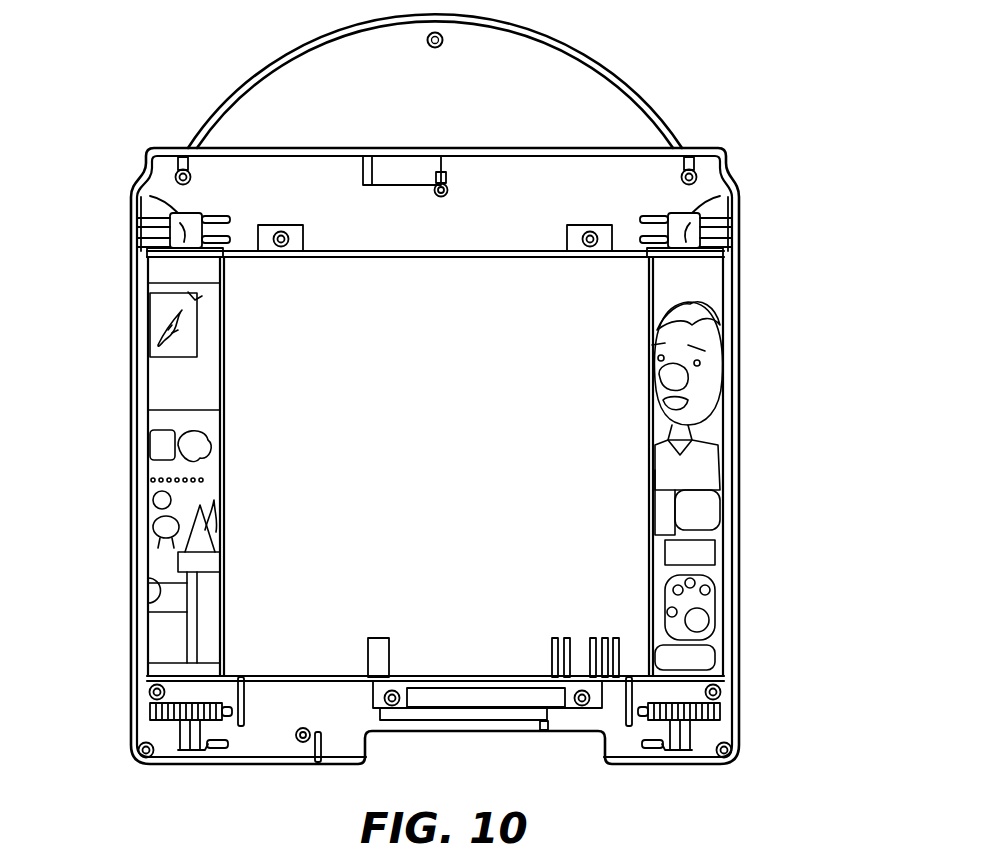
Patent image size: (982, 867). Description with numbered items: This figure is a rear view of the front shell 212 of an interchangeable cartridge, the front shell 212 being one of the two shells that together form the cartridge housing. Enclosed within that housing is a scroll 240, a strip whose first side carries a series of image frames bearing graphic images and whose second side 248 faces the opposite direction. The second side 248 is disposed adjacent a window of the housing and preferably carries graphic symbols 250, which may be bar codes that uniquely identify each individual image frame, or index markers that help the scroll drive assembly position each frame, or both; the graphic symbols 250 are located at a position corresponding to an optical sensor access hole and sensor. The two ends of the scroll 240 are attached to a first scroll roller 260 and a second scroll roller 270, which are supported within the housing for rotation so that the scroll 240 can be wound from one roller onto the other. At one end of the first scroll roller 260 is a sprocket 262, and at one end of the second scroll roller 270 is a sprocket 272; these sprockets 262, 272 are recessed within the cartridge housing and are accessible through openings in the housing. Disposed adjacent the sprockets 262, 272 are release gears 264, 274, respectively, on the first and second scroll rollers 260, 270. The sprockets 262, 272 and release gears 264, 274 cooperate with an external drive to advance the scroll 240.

The front shell 212 is at (648, 98).
The scroll 240 is at (567, 324).
The second side 248 is at (567, 460).
The graphic symbols 250 is at (556, 638).
The first scroll roller 260 is at (733, 194).
The sprocket 262 is at (720, 762).
The release gear 264 is at (738, 706).
The second scroll roller 270 is at (137, 197).
The sprocket 272 is at (157, 760).
The release gear 274 is at (137, 706).